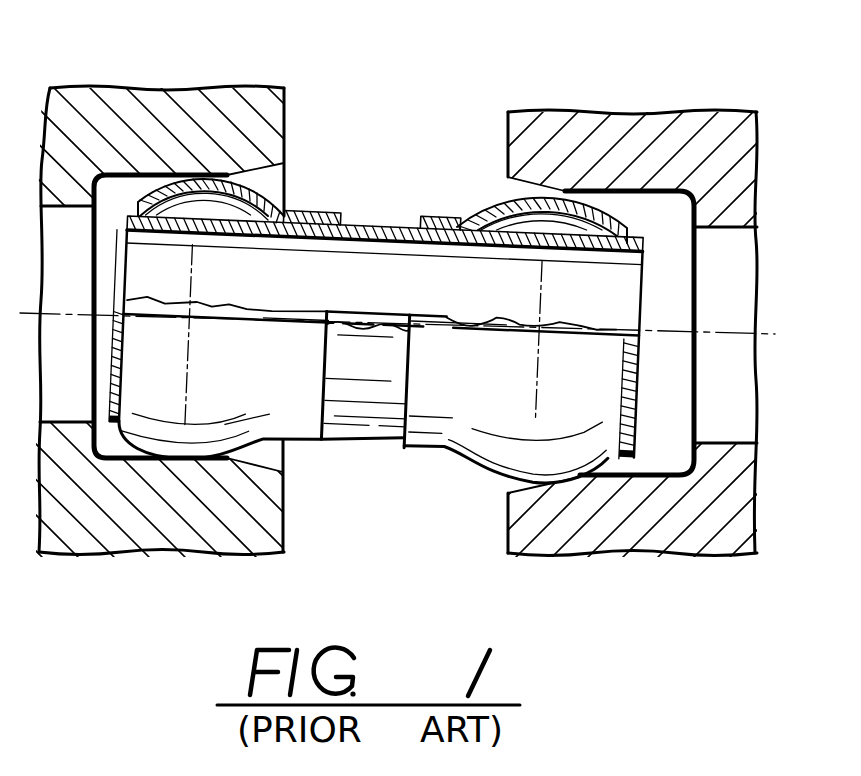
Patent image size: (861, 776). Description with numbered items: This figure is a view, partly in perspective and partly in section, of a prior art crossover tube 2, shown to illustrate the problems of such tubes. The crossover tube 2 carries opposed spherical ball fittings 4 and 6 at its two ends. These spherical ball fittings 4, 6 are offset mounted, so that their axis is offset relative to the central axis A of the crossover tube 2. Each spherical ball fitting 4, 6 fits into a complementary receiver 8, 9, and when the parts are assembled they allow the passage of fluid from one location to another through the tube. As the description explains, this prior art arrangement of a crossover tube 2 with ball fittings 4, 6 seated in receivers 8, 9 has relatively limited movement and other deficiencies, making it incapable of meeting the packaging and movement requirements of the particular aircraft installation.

The receiver 8 is at (140, 176).
The spherical ball fitting 6 is at (615, 196).
The spherical ball fitting 4 is at (302, 170).
The receiver 9 is at (513, 180).
The crossover tube 2 is at (373, 224).
The central axis A is at (730, 333).